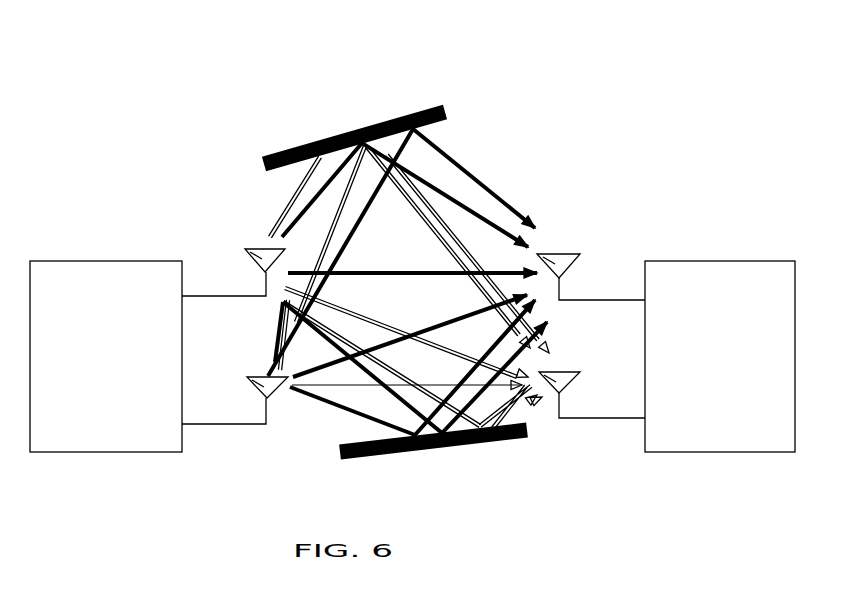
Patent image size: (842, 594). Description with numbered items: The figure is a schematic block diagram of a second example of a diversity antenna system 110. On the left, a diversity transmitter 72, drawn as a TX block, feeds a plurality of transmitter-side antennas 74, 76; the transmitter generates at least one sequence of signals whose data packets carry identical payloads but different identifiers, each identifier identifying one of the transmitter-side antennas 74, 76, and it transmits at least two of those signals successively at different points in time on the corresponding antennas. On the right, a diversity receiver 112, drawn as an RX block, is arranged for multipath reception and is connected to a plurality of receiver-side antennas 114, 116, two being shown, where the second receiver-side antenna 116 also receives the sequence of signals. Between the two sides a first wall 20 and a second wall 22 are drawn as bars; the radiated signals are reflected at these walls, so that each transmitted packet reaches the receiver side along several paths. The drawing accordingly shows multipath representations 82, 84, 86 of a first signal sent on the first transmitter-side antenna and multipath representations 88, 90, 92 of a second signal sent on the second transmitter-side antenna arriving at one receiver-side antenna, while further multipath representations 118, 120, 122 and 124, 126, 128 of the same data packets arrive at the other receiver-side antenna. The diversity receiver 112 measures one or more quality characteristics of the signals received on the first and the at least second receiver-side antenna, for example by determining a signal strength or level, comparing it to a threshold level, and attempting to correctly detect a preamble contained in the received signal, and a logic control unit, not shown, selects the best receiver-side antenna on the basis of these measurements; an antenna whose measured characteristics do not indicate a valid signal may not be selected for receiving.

The diversity antenna system 110 is at (408, 64).
The diversity transmitter 72 is at (82, 274).
The diversity receiver 112 is at (697, 275).
The transmitter-side antenna 76 is at (253, 248).
The transmitter-side antenna 74 is at (251, 376).
The receiver-side antenna 114 is at (559, 263).
The second receiver-side antenna 116 is at (560, 378).
The first wall 20 is at (330, 133).
The second wall 22 is at (473, 445).
The multipath representation 82 is at (473, 211).
The multipath representation 88 is at (507, 199).
The multipath representation 84 is at (340, 273).
The multipath representation 90 is at (440, 325).
The multipath representation 92 is at (505, 343).
The multipath representation 86 is at (478, 373).
The multipath representation 118 is at (283, 210).
The multipath representation 120 is at (357, 314).
The multipath representation 122 is at (280, 313).
The multipath representation 124 is at (282, 350).
The multipath representation 126 is at (347, 386).
The multipath representation 128 is at (536, 404).